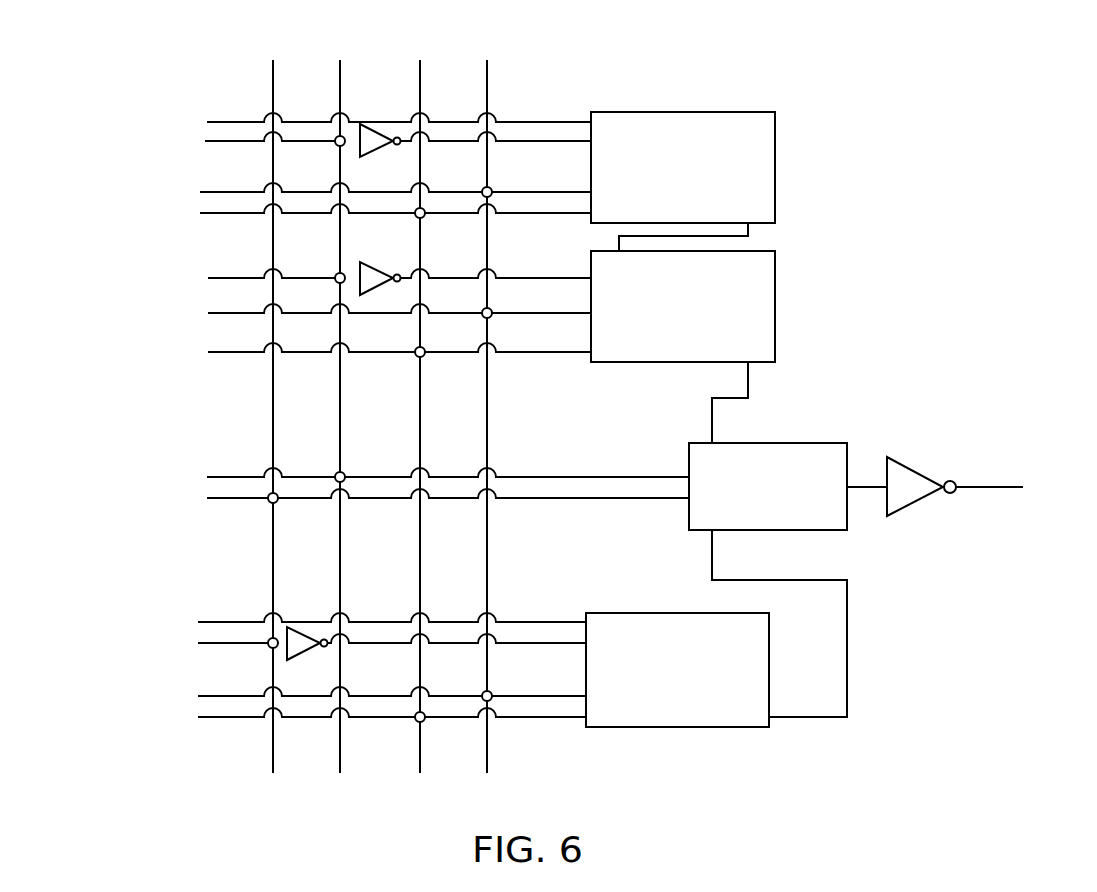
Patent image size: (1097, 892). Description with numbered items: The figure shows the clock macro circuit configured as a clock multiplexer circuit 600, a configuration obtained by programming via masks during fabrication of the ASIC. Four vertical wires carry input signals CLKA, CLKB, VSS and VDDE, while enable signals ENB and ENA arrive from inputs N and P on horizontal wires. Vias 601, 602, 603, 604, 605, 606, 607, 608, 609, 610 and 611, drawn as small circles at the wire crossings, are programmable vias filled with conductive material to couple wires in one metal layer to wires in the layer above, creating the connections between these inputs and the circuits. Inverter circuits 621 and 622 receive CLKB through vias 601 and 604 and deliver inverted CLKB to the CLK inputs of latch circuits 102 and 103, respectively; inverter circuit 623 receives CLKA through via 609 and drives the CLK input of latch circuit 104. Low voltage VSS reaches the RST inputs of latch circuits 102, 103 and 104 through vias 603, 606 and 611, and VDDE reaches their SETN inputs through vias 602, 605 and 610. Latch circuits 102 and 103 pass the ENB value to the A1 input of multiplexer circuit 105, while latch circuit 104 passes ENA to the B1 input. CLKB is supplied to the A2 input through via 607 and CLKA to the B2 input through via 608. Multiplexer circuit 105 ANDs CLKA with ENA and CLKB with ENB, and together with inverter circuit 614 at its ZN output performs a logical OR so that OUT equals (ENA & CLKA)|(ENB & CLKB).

The clock multiplexer circuit 600 is at (127, 38).
The latch circuit 102 is at (688, 112).
The latch circuit 103 is at (657, 362).
The latch circuit 104 is at (622, 613).
The multiplexer circuit 105 is at (800, 443).
The inverter circuit 614 is at (915, 467).
The via 601 is at (336, 147).
The via 602 is at (492, 188).
The via 603 is at (423, 218).
The via 604 is at (338, 271).
The via 605 is at (490, 308).
The via 606 is at (423, 357).
The via 607 is at (343, 472).
The via 608 is at (276, 503).
The via 609 is at (270, 650).
The via 610 is at (490, 690).
The via 611 is at (423, 722).
The inverter circuit 621 is at (370, 150).
The inverter circuit 622 is at (368, 263).
The inverter circuit 623 is at (293, 657).